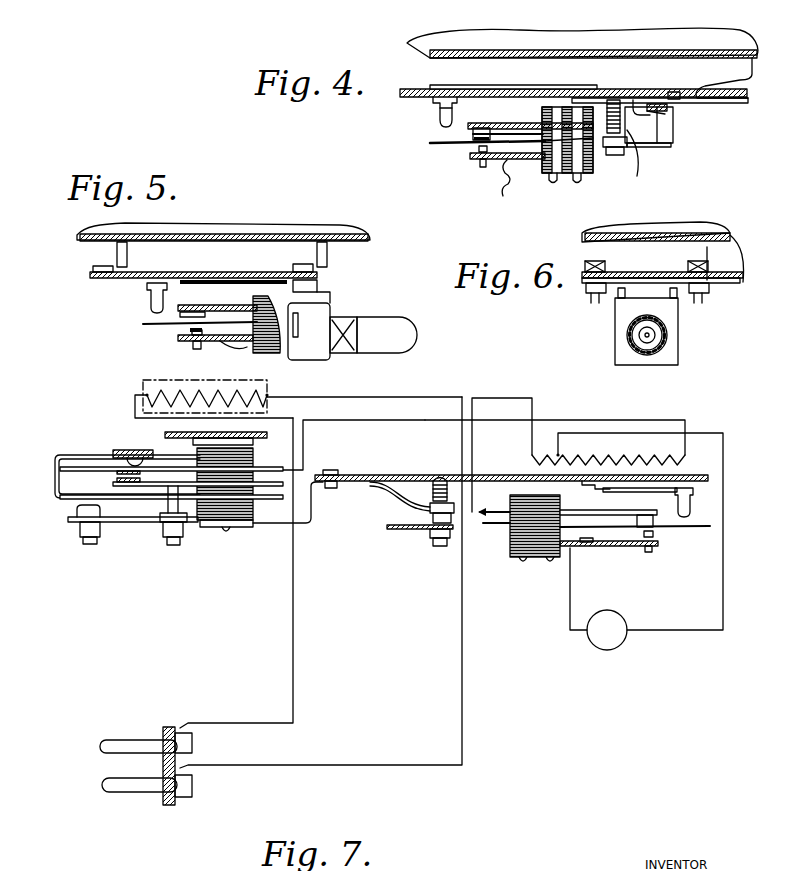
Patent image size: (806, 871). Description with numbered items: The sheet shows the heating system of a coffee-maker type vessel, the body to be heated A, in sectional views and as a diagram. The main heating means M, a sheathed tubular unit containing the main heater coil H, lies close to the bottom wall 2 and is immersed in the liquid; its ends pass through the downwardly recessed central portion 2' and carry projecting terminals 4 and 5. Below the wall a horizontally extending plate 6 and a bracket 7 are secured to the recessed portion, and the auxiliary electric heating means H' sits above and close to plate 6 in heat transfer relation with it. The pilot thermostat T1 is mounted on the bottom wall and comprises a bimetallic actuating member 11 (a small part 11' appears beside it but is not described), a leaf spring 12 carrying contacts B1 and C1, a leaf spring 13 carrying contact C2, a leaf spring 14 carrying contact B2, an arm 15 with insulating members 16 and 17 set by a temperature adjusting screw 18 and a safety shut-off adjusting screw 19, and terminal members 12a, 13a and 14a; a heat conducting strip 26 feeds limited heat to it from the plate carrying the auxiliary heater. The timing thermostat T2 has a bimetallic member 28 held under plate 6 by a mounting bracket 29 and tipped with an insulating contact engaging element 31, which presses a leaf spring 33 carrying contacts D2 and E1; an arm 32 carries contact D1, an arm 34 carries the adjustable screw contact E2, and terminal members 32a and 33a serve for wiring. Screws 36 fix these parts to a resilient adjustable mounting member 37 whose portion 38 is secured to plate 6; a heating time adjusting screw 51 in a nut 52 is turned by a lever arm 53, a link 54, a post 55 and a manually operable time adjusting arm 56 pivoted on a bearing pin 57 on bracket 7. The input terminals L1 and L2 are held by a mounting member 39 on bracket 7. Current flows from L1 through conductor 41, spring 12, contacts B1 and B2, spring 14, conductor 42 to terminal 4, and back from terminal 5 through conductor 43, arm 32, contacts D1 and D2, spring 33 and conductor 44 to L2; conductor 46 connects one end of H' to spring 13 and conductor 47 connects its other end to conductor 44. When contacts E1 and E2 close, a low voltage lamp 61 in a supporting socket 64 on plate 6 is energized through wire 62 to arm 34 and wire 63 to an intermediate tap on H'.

In FIG. 4, the body to be heated A is at (622, 22).
In FIG. 5, the body to be heated A is at (279, 221).
In FIG. 6, the body to be heated A is at (703, 222).
In FIG. 4, the bottom wall 2 is at (593, 47).
In FIG. 5, the bottom wall 2 is at (224, 247).
In FIG. 6, the bottom wall 2 is at (657, 221).
In FIG. 7, the bottom wall 2 is at (309, 414).
In FIG. 4, the downwardly recessed central portion 2' is at (728, 78).
In FIG. 5, the downwardly recessed central portion 2' is at (189, 254).
In FIG. 6, the downwardly recessed central portion 2' is at (738, 258).
In FIG. 4, the auxiliary electric heating means H' is at (573, 80).
In FIG. 6, the auxiliary electric heating means H' is at (662, 265).
In FIG. 7, the auxiliary electric heating means H' is at (608, 450).
In FIG. 4, the bracket 7 is at (740, 103).
In FIG. 6, the supporting plate 6 is at (740, 285).
In FIG. 7, the supporting plate 6 is at (708, 477).
In FIG. 4, the bimetallic actuating member 28 is at (432, 101).
In FIG. 5, the bimetallic actuating member 28 is at (221, 287).
In FIG. 7, the bimetallic actuating member 28 is at (640, 488).
In FIG. 5, the mounting bracket 29 is at (318, 281).
In FIG. 7, the mounting bracket 29 is at (587, 489).
In FIG. 4, the contact engaging element 31 is at (440, 118).
In FIG. 5, the contact engaging element 31 is at (151, 305).
In FIG. 7, the contact engaging element 31 is at (693, 505).
In FIG. 4, the arm 32 is at (523, 123).
In FIG. 5, the arm 32 is at (228, 305).
In FIG. 7, the arm 32 is at (580, 482).
In FIG. 4, the leaf spring 33 is at (433, 147).
In FIG. 5, the leaf spring 33 is at (153, 327).
In FIG. 7, the leaf spring 33 is at (702, 530).
In FIG. 4, the arm 34 is at (493, 160).
In FIG. 5, the arm 34 is at (218, 342).
In FIG. 7, the arm 34 is at (610, 551).
In FIG. 4, the screws 36 is at (567, 176).
In FIG. 5, the screws 36 is at (268, 358).
In FIG. 7, the screws 36 is at (548, 563).
In FIG. 4, the adjustable mounting member 37 is at (599, 108).
In FIG. 7, the adjustable mounting member 37 is at (455, 500).
In FIG. 4, the portion of mounting member 38 is at (673, 91).
In FIG. 7, the portion of mounting member 38 is at (430, 480).
In FIG. 4, the heating time adjusting screw 51 is at (638, 162).
In FIG. 7, the heating time adjusting screw 51 is at (430, 518).
In FIG. 4, the nut 52 is at (644, 118).
In FIG. 7, the nut 52 is at (430, 509).
In FIG. 4, the lever arm 53 is at (621, 155).
In FIG. 7, the lever arm 53 is at (433, 537).
In FIG. 4, the link 54 is at (654, 147).
In FIG. 7, the link 54 is at (392, 533).
In FIG. 4, the post 55 is at (676, 137).
In FIG. 4, the time adjusting arm 56 is at (668, 108).
In FIG. 4, the bearing pin 57 is at (663, 114).
In FIG. 5, the electric lamp 61 is at (397, 320).
In FIG. 7, the electric lamp 61 is at (616, 651).
In FIG. 4, the wire 62 is at (506, 188).
In FIG. 7, the wire 62 is at (570, 599).
In FIG. 7, the wire 63 is at (723, 594).
In FIG. 5, the supporting socket 64 is at (330, 298).
In FIG. 6, the supporting socket 64 is at (678, 325).
In FIG. 4, the normally closed contact D1 is at (464, 128).
In FIG. 5, the normally closed contact D1 is at (183, 281).
In FIG. 7, the normally closed contact D1 is at (657, 513).
In FIG. 4, the normally closed contact D2 is at (470, 138).
In FIG. 5, the normally closed contact D2 is at (170, 326).
In FIG. 7, the normally closed contact D2 is at (712, 527).
In FIG. 4, the normally open signal circuit contact E1 is at (473, 142).
In FIG. 5, the normally open signal circuit contact E1 is at (193, 334).
In FIG. 7, the normally open signal circuit contact E1 is at (640, 534).
In FIG. 4, the normally open signal circuit contact E2 is at (478, 164).
In FIG. 5, the normally open signal circuit contact E2 is at (197, 350).
In FIG. 7, the normally open signal circuit contact E2 is at (652, 550).
In FIG. 4, the timing thermostat T2 is at (441, 158).
In FIG. 5, the timing thermostat T2 is at (120, 328).
In FIG. 7, the timing thermostat T2 is at (670, 537).
In FIG. 7, the pilot thermostat T1 is at (46, 470).
In FIG. 7, the main heating means M is at (143, 381).
In FIG. 7, the main heater coil H is at (223, 391).
In FIG. 7, the projecting terminal 4 is at (147, 395).
In FIG. 7, the projecting terminal 5 is at (270, 398).
In FIG. 7, the bimetallic actuating member 11 is at (204, 432).
In FIG. 7, the support block 11' is at (133, 449).
In FIG. 7, the leaf spring 12 is at (157, 472).
In FIG. 7, the leaf spring 13 is at (165, 487).
In FIG. 7, the leaf spring 14 is at (65, 500).
In FIG. 7, the projecting terminal member 12a is at (273, 467).
In FIG. 7, the projecting terminal member 13a is at (268, 499).
In FIG. 7, the projecting terminal member 14a is at (268, 488).
In FIG. 7, the normally closed safety shut-off contact member B1 is at (105, 462).
In FIG. 7, the normally closed safety shut-off contact member B2 is at (100, 458).
In FIG. 7, the normally open contact member C1 is at (98, 479).
In FIG. 7, the normally open contact member C2 is at (118, 481).
In FIG. 7, the arm 15 is at (113, 523).
In FIG. 7, the insulating member 16 is at (180, 503).
In FIG. 7, the insulating member 17 is at (80, 508).
In FIG. 7, the temperature adjusting screw 18 is at (177, 547).
In FIG. 7, the safety shut-off adjusting screw 19 is at (83, 546).
In FIG. 7, the heat conducting strip 26 is at (307, 528).
In FIG. 7, the projecting terminal member 32a is at (500, 511).
In FIG. 7, the projecting terminal member 33a is at (483, 527).
In FIG. 7, the mounting member 39 is at (168, 727).
In FIG. 7, the conductor 41 is at (293, 671).
In FIG. 7, the conductor 42 is at (303, 441).
In FIG. 7, the conductor 43 is at (397, 401).
In FIG. 7, the conductor 44 is at (462, 701).
In FIG. 7, the conductor 46 is at (426, 420).
In FIG. 7, the conductor 47 is at (533, 401).
In FIG. 7, the input terminal L1 is at (133, 740).
In FIG. 7, the input terminal L2 is at (123, 794).